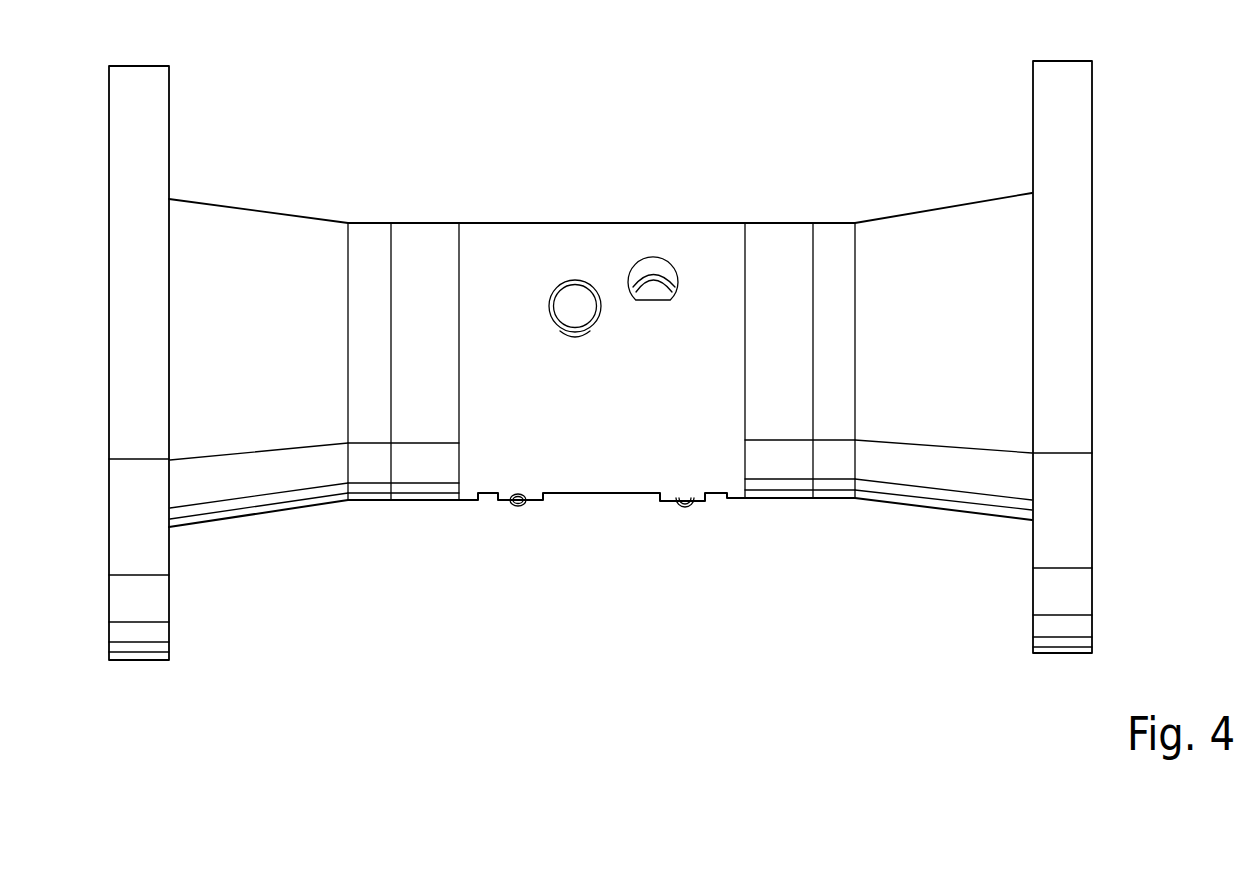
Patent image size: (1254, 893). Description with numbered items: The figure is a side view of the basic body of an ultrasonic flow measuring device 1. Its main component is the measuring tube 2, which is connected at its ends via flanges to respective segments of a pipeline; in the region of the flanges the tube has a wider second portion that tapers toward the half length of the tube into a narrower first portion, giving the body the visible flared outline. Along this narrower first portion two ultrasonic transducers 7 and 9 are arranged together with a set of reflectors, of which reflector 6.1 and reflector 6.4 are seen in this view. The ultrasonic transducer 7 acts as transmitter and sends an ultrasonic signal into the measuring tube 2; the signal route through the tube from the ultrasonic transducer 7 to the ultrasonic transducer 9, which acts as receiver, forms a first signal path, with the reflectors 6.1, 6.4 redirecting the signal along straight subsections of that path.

The ultrasonic flow measuring device 1 is at (830, 115).
The measuring tube 2 is at (929, 472).
The reflector 6.1 is at (576, 295).
The reflector 6.4 is at (657, 262).
The ultrasonic transducer 7 is at (680, 508).
The ultrasonic transducer 9 is at (513, 508).